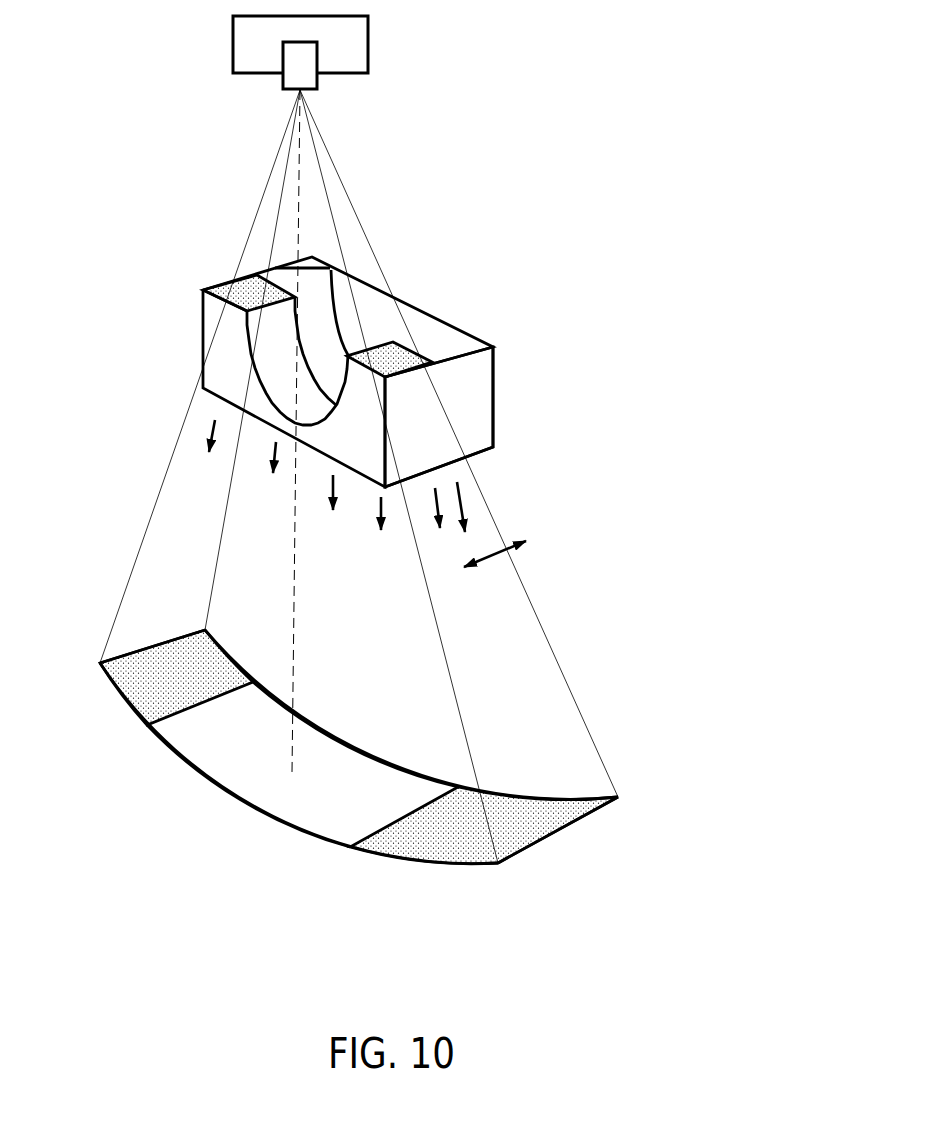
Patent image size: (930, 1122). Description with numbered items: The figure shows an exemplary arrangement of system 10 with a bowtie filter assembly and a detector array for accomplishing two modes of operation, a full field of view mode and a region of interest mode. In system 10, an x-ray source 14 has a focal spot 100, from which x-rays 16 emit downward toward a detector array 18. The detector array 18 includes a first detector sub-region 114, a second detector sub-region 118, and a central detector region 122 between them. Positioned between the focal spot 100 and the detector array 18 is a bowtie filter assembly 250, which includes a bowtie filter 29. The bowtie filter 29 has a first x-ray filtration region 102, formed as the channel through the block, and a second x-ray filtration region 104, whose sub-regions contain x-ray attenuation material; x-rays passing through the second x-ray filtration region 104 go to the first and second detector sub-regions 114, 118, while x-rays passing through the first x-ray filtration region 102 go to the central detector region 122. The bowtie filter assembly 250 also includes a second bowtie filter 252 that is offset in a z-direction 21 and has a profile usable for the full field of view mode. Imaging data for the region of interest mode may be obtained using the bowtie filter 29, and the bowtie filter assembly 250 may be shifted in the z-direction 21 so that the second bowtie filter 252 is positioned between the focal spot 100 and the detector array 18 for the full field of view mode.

The system 10 is at (515, 105).
The x-ray source 14 is at (352, 43).
The focal spot 100 is at (314, 97).
The x-rays 16 is at (206, 431).
The bowtie filter assembly 250 is at (384, 337).
The second bowtie filter 252 is at (480, 375).
The second x-ray filtration region 104 is at (230, 260).
The bowtie filter 29 is at (213, 270).
The first x-ray filtration region 102 is at (267, 398).
The z-direction 21 is at (497, 562).
The detector array 18 is at (369, 762).
The first detector sub-region 114 is at (128, 690).
The second detector sub-region 118 is at (442, 850).
The central detector region 122 is at (240, 785).